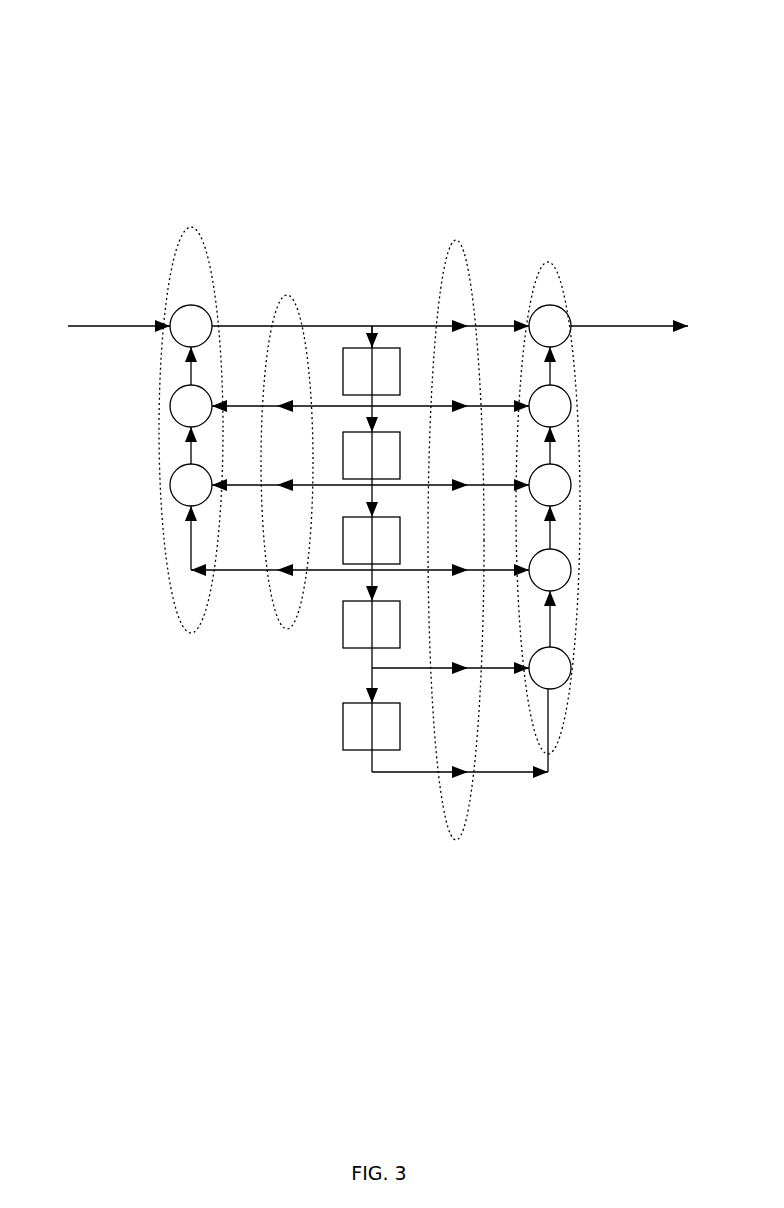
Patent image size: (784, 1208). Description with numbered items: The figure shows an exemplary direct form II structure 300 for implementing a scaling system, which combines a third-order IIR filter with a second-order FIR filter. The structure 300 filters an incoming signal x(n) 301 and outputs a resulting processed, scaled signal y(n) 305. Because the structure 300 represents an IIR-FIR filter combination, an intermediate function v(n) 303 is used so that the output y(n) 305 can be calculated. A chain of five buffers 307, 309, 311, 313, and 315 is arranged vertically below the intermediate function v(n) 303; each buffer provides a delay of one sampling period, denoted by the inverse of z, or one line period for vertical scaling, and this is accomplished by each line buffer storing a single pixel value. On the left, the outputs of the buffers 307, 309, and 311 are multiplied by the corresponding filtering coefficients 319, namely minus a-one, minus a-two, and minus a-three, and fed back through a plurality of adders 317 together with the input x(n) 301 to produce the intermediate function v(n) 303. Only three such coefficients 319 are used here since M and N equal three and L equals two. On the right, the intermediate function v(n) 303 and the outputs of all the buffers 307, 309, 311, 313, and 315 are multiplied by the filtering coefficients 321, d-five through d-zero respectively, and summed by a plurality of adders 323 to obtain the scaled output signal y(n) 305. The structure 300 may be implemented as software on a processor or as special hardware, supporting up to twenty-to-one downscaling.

The direct form II structure 300 is at (118, 96).
The incoming signal x(n) 301 is at (99, 283).
The intermediate function v(n) 303 is at (365, 277).
The output scaled signal y(n) 305 is at (638, 282).
The buffer 307 is at (386, 389).
The buffer 309 is at (386, 473).
The buffer 311 is at (386, 558).
The buffer 313 is at (386, 642).
The buffer 315 is at (386, 744).
The adders 317 is at (191, 633).
The filtering coefficients 319 is at (284, 295).
The filtering coefficients 321 is at (456, 240).
The adders 323 is at (568, 706).